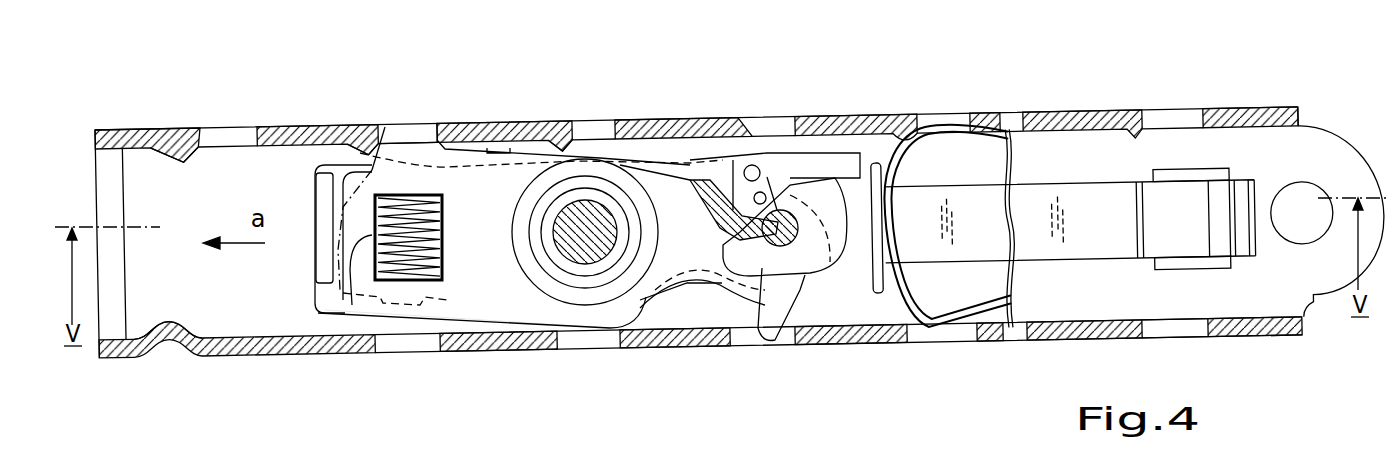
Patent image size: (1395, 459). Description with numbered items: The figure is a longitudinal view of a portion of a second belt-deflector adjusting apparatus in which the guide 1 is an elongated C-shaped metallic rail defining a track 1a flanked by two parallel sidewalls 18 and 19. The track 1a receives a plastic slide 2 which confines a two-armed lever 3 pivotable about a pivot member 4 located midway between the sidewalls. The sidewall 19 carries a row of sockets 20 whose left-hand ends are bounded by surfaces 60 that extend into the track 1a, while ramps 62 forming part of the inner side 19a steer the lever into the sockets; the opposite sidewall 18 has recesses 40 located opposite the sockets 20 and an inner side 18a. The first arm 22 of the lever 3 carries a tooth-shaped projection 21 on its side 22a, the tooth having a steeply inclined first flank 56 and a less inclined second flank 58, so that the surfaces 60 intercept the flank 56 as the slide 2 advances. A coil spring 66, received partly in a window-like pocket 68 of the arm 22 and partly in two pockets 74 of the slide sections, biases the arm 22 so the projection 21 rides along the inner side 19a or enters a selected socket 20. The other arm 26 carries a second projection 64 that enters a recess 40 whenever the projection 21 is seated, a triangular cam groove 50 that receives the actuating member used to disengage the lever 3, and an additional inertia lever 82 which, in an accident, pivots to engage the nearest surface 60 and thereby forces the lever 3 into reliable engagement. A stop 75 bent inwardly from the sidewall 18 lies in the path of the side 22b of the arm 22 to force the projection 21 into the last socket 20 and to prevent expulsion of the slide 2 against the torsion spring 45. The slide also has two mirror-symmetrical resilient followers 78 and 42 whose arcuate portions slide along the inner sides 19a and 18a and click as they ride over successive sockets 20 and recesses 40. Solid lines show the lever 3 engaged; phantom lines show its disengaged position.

The guide 1 is at (257, 346).
The track 1a is at (1058, 171).
The slide 2 is at (327, 303).
The lever 3 is at (471, 302).
The pivot member 4 is at (589, 253).
The sidewall 18 is at (1070, 330).
The inner side of sidewall 18 18a is at (1258, 310).
The sidewall 19 is at (1226, 108).
The inner side of sidewall 19 19a is at (840, 137).
The socket 20 is at (230, 131).
The projection 21 is at (394, 136).
The first arm 22 is at (350, 215).
The side of arm 22 22a is at (488, 147).
The side of arm 22 22b is at (410, 303).
The arm 26 is at (720, 284).
The recess 40 is at (1181, 329).
The resilient follower 42 is at (953, 330).
The torsion spring 45 is at (1160, 228).
The triangular cam groove 50 is at (808, 280).
The first flank 56 is at (380, 127).
The second flank 58 is at (427, 140).
The surface 60 is at (206, 137).
The ramp 62 is at (281, 137).
The second projection 64 is at (800, 283).
The coil spring 66 is at (443, 254).
The window-like pocket 68 is at (458, 264).
The pocket 74 is at (353, 318).
The stop 75 is at (166, 343).
The resilient follower 78 is at (948, 128).
The additional lever 82 is at (730, 197).